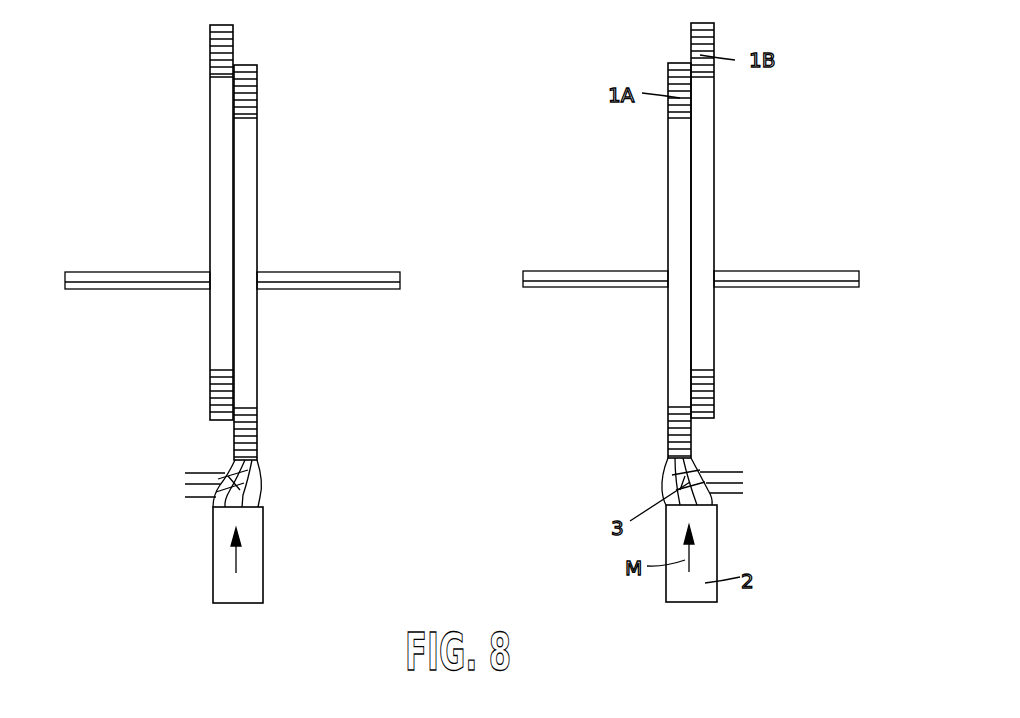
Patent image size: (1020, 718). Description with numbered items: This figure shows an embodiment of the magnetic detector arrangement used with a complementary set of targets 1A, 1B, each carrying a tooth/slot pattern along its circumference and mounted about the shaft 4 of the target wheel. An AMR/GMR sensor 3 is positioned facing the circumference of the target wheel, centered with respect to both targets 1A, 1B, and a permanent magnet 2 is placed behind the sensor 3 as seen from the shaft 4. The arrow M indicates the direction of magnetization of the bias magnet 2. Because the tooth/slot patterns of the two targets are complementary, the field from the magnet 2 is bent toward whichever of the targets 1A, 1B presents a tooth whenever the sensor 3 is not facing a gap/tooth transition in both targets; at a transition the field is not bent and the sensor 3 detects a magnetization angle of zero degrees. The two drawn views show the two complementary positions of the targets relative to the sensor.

The first target 1A is at (223, 56).
The second target 1B is at (245, 99).
The permanent magnet 2 is at (252, 586).
The AMR/GMR sensor 3 is at (213, 500).
The shaft 4 is at (98, 272).
The magnetization direction of the bias magnet M is at (232, 563).